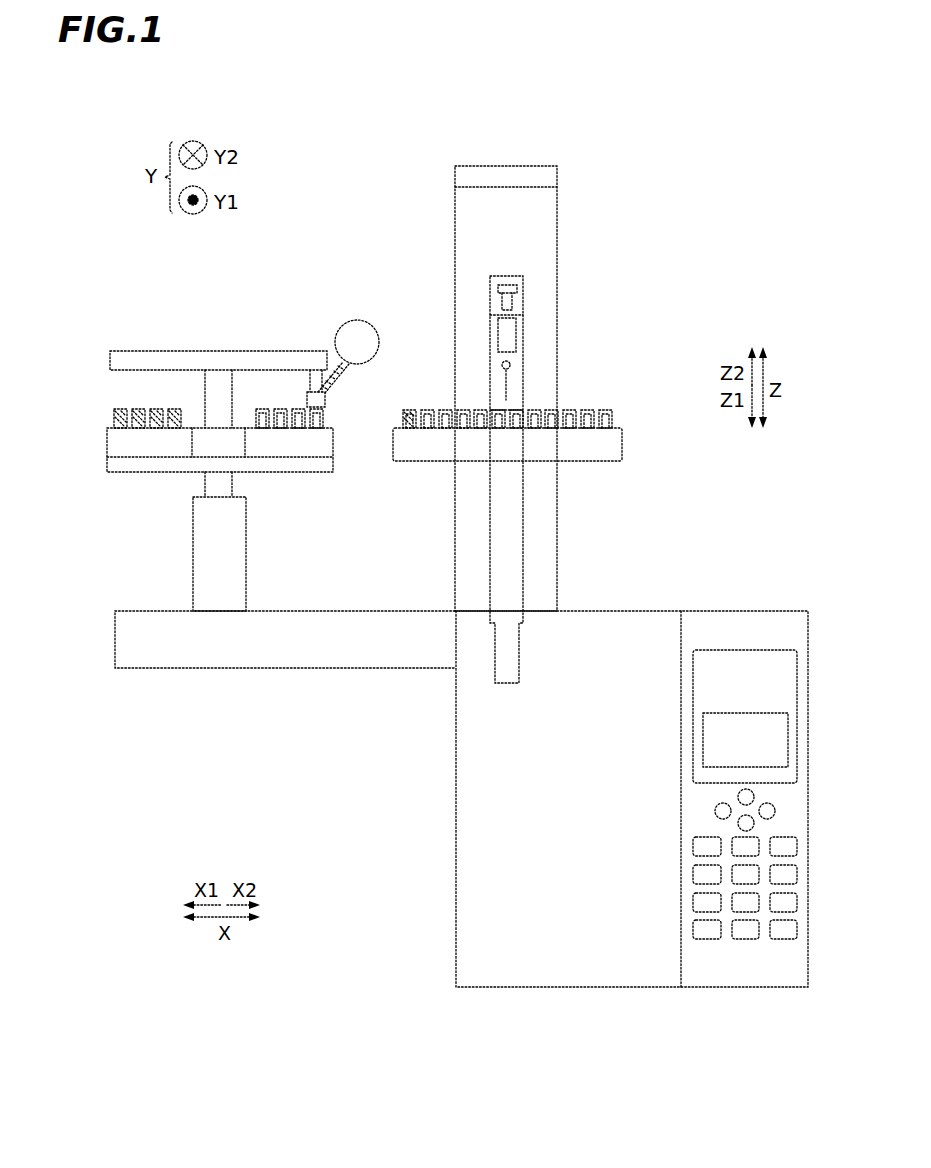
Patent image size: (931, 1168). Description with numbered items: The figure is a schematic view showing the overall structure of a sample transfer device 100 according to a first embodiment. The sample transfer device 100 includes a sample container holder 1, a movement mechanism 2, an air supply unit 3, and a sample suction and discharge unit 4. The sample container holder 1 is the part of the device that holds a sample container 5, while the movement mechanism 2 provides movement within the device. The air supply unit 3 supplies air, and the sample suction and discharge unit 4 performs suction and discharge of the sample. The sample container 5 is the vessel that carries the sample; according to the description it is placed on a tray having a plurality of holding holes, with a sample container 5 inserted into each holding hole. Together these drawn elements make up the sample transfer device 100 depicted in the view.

The sample transfer device 100 is at (507, 139).
The sample container holder 1 is at (325, 398).
The movement mechanism 2 is at (110, 361).
The air supply unit 3 is at (370, 360).
The sample suction and discharge unit 4 is at (523, 315).
The sample container 5 is at (257, 429).